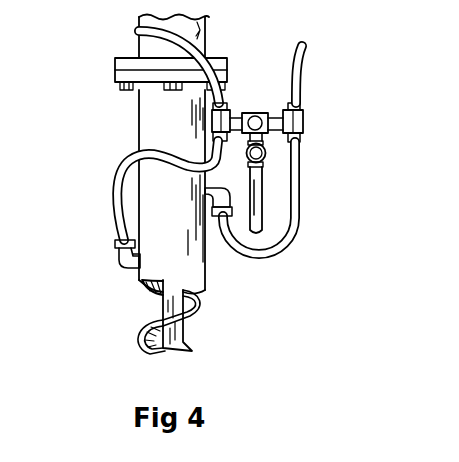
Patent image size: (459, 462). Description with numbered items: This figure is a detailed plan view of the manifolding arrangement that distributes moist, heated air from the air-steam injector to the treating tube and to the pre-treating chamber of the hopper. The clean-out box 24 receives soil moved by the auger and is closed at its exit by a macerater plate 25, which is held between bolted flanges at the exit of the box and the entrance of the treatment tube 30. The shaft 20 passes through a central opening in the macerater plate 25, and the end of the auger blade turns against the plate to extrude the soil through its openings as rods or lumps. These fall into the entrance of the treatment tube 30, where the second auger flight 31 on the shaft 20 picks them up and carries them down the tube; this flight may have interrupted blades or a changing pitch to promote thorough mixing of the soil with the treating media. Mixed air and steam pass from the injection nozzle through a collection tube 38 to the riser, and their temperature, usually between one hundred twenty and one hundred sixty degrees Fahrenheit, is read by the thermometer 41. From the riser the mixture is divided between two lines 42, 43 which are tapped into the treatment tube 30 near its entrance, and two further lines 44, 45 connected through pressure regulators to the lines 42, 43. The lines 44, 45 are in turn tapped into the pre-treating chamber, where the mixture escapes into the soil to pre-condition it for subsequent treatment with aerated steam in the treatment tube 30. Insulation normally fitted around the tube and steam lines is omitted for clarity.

The shaft 20 is at (185, 328).
The clean-out box 24 is at (205, 27).
The macerater plate 25 is at (117, 72).
The treatment tube 30 is at (143, 120).
The second auger flight 31 is at (150, 320).
The collection tube 38 is at (258, 173).
The thermometer 41 is at (249, 114).
The line 42 is at (293, 203).
The line 43 is at (112, 188).
The line 44 is at (307, 51).
The line 45 is at (137, 31).